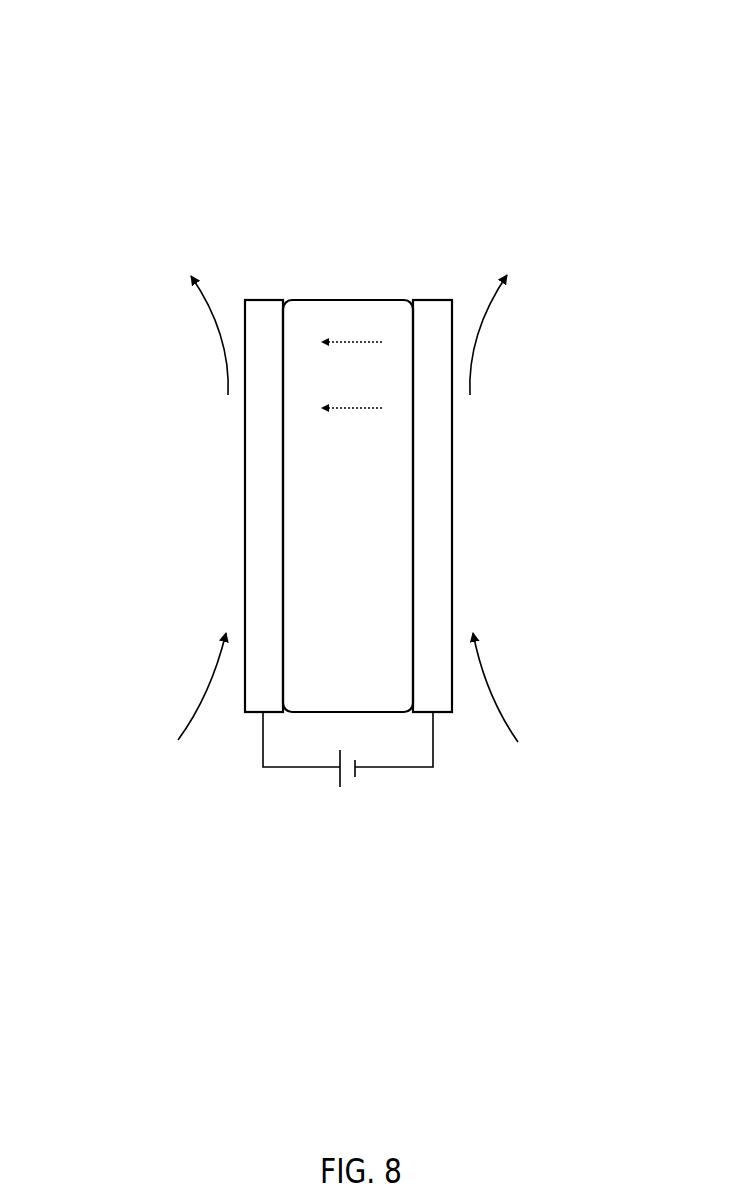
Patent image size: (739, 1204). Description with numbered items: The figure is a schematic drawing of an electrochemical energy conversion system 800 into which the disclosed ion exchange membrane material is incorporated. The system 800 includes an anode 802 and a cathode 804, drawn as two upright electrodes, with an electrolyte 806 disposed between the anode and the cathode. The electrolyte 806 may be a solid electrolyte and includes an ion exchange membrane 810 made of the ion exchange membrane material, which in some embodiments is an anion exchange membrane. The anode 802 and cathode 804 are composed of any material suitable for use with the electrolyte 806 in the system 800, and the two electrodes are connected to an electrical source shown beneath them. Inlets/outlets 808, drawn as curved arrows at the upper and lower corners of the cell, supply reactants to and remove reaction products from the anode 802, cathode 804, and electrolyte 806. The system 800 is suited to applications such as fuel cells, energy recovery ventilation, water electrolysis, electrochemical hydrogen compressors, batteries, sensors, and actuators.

The electrochemical energy conversion system 800 is at (178, 101).
The anode 802 is at (263, 300).
The cathode 804 is at (433, 300).
The electrolyte 806 is at (372, 517).
The inlets/outlets 808 is at (222, 357).
The ion exchange membrane 810 is at (347, 300).